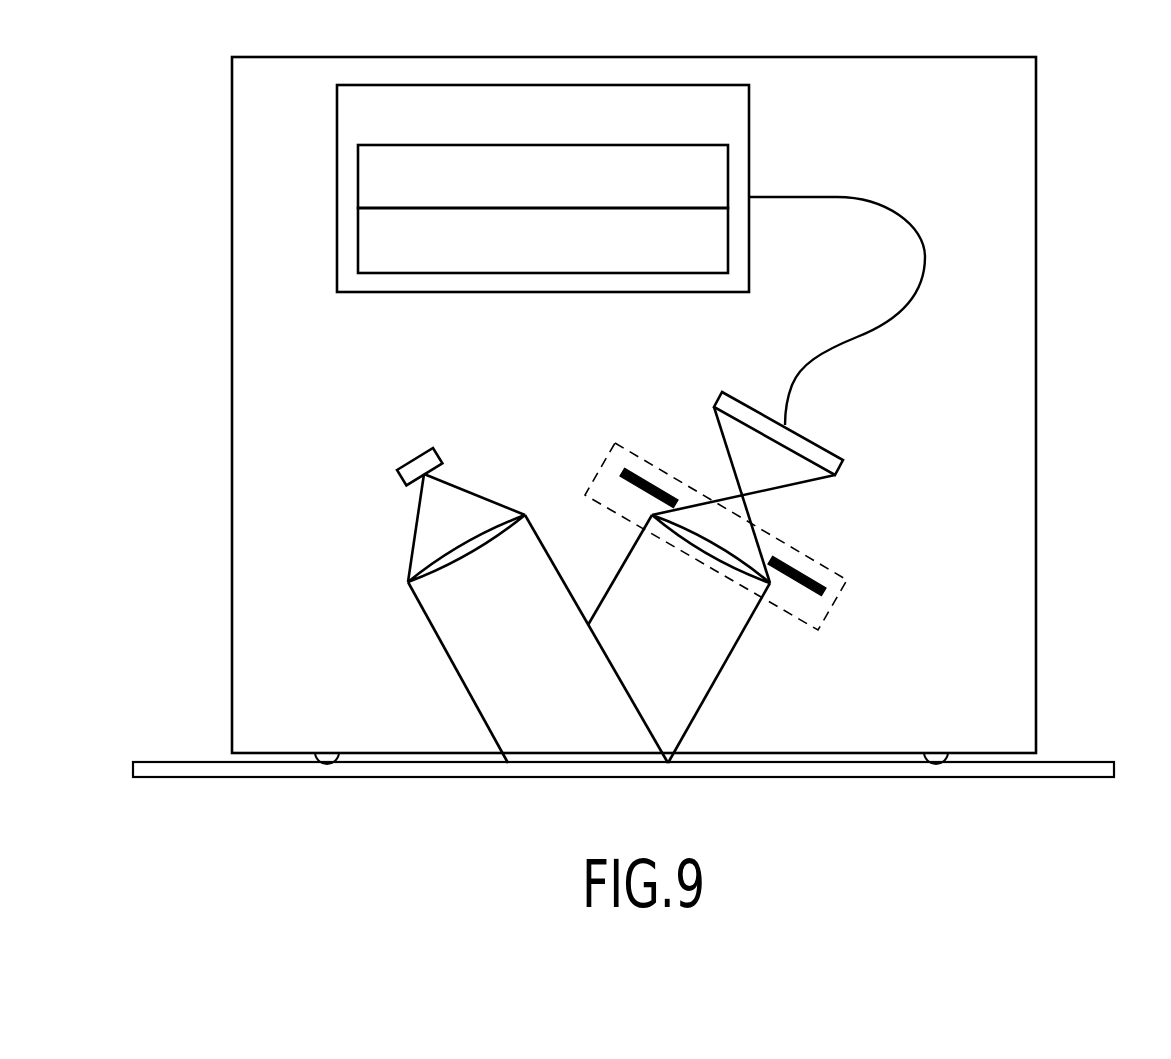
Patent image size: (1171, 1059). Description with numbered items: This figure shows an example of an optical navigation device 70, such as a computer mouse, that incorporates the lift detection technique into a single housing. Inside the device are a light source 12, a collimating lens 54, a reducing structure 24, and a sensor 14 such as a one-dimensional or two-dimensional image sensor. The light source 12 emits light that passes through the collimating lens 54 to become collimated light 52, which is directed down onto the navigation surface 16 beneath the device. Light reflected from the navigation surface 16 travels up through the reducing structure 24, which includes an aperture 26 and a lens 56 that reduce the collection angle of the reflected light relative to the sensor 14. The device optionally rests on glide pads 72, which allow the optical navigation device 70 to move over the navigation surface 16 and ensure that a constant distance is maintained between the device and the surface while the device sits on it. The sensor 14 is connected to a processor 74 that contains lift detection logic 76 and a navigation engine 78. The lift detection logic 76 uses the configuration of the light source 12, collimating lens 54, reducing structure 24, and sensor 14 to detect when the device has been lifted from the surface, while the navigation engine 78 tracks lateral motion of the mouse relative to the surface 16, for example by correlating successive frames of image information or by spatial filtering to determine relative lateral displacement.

The light source 12 is at (443, 459).
The sensor 14 is at (836, 452).
The navigation surface 16 is at (1087, 765).
The reducing structure 24 is at (813, 626).
The aperture 26 is at (646, 478).
The collimated light 52 is at (553, 556).
The collimating lens 54 is at (487, 540).
The lens 56 is at (718, 567).
The optical navigation device 70 is at (1037, 407).
The glide pads 72 is at (338, 765).
The processor 74 is at (749, 115).
The lift detection logic 76 is at (709, 197).
The navigation engine 78 is at (709, 260).